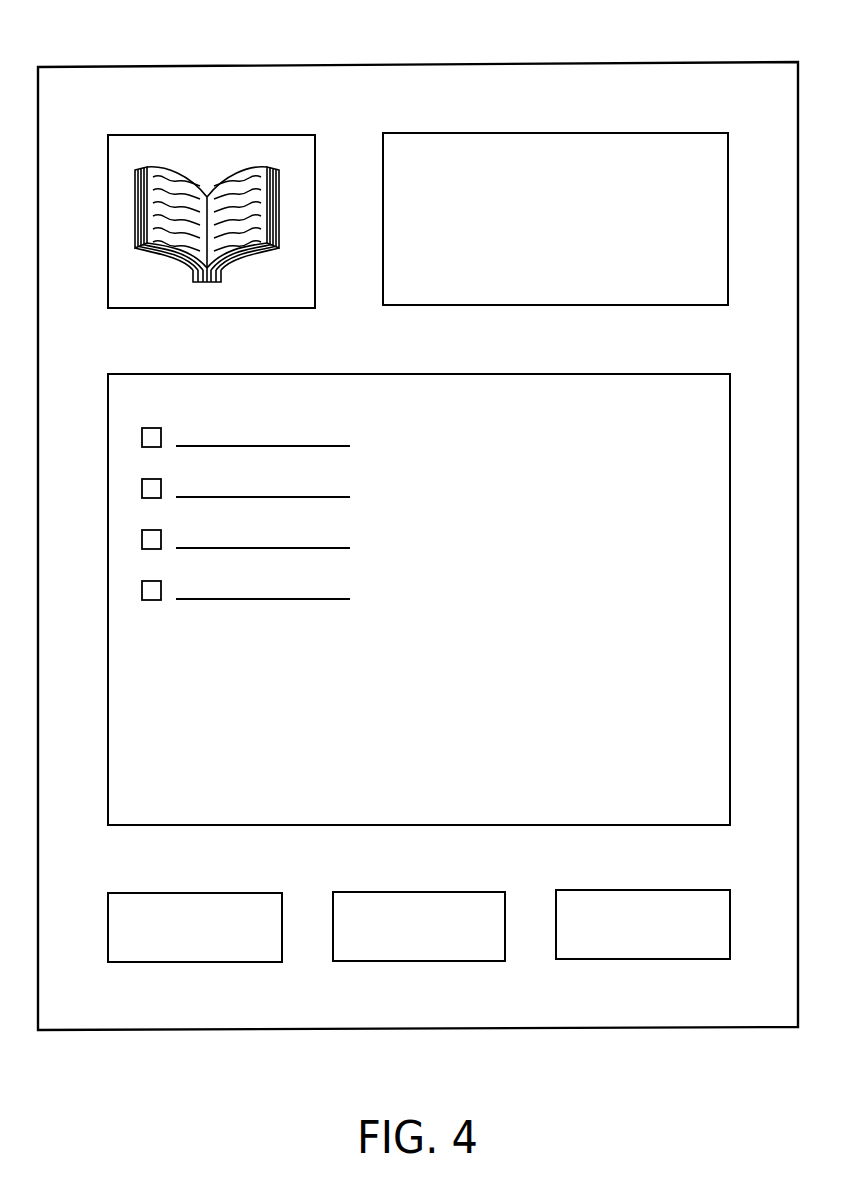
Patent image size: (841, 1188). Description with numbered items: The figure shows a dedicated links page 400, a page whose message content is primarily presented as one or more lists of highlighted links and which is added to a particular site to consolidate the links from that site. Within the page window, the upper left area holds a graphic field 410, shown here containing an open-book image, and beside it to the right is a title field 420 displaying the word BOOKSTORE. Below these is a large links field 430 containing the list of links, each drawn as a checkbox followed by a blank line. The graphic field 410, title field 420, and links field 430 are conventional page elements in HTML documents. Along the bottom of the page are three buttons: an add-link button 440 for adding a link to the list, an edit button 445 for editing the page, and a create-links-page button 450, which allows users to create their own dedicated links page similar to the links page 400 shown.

The dedicated links page 400 is at (682, 62).
The graphic field 410 is at (307, 299).
The title field 420 is at (722, 297).
The links field 430 is at (722, 402).
The add-link button 440 is at (683, 959).
The edit button 445 is at (420, 961).
The create-links-page button 450 is at (198, 962).